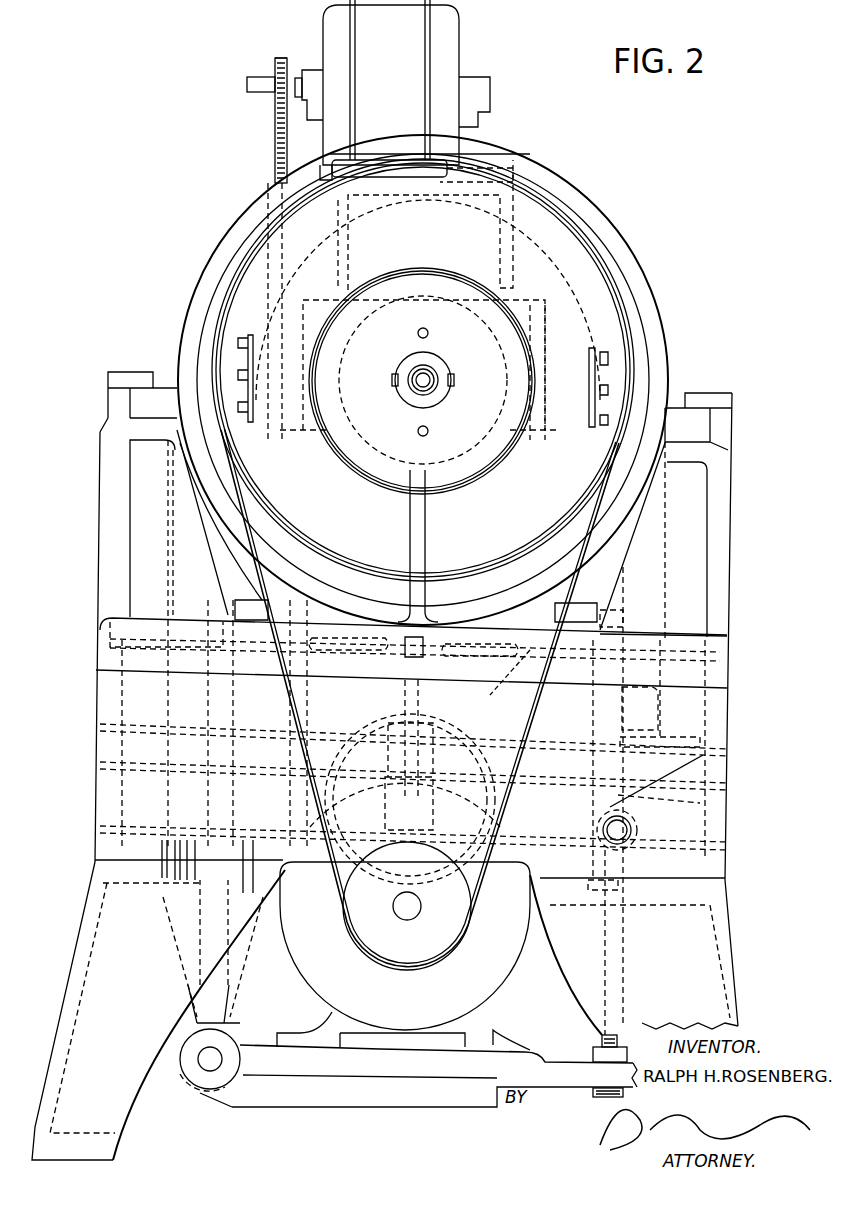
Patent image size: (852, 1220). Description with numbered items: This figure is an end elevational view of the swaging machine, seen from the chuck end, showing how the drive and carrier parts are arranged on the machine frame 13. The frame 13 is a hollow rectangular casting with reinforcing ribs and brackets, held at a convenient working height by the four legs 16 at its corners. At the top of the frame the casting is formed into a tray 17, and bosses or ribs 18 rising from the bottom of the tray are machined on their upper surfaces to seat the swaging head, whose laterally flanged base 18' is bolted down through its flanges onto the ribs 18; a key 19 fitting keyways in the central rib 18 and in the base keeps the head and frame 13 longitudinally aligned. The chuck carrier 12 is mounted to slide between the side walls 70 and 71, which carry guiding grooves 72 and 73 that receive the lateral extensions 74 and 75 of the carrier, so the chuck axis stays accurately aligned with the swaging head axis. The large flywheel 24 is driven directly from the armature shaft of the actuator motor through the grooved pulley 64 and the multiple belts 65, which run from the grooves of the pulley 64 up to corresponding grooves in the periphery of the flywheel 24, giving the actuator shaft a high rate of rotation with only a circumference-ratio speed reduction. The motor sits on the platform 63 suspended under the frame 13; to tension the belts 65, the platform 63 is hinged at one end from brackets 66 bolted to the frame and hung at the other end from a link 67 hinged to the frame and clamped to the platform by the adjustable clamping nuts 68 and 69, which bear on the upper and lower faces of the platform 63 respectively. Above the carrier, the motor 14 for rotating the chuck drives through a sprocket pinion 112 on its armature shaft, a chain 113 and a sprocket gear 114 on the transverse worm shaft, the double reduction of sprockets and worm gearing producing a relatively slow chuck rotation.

The chuck carrier 12 is at (176, 385).
The machine frame 13 is at (735, 723).
The motor for rotating the chuck 14 is at (450, 50).
The legs 16 is at (82, 965).
The tray 17 is at (722, 635).
The bosses or ribs 18 is at (450, 677).
The laterally flanged base 18' is at (594, 646).
The key 19 is at (405, 657).
The flywheel 24 is at (626, 330).
The platform 63 is at (453, 1072).
The grooved pulley 64 is at (437, 947).
The multiple belts 65 is at (536, 713).
The brackets 66 is at (228, 988).
The link 67 is at (608, 982).
The adjustable clamping nut 68 is at (596, 1050).
The adjustable clamping nut 69 is at (600, 1094).
The side wall 70 is at (110, 487).
The side wall 71 is at (725, 505).
The guiding groove 72 is at (130, 420).
The guiding groove 73 is at (712, 440).
The lateral extension 74 is at (140, 404).
The lateral extension 75 is at (703, 424).
The sprocket pinion 112 is at (276, 62).
The chain 113 is at (285, 174).
The sprocket gear 114 is at (270, 350).